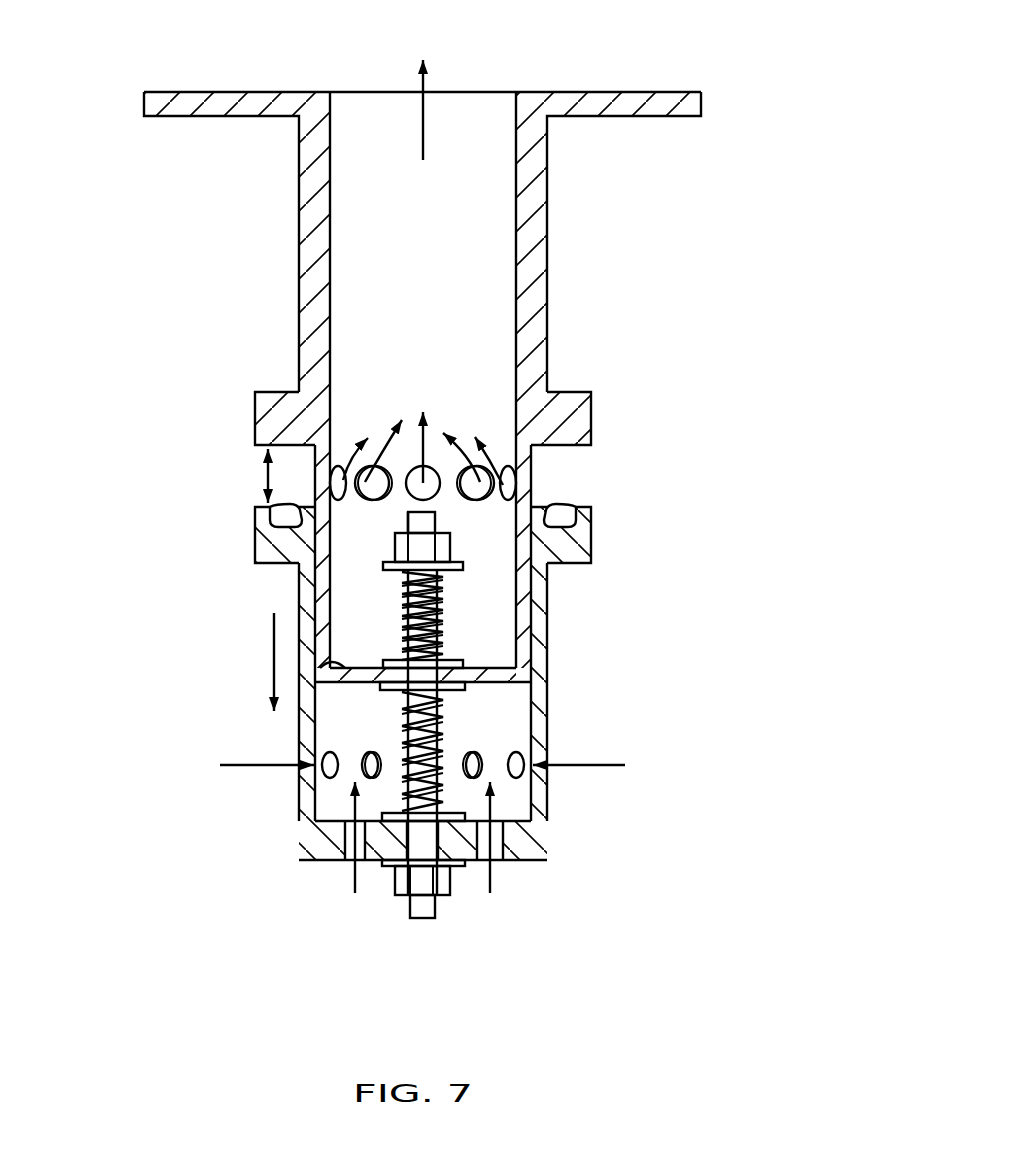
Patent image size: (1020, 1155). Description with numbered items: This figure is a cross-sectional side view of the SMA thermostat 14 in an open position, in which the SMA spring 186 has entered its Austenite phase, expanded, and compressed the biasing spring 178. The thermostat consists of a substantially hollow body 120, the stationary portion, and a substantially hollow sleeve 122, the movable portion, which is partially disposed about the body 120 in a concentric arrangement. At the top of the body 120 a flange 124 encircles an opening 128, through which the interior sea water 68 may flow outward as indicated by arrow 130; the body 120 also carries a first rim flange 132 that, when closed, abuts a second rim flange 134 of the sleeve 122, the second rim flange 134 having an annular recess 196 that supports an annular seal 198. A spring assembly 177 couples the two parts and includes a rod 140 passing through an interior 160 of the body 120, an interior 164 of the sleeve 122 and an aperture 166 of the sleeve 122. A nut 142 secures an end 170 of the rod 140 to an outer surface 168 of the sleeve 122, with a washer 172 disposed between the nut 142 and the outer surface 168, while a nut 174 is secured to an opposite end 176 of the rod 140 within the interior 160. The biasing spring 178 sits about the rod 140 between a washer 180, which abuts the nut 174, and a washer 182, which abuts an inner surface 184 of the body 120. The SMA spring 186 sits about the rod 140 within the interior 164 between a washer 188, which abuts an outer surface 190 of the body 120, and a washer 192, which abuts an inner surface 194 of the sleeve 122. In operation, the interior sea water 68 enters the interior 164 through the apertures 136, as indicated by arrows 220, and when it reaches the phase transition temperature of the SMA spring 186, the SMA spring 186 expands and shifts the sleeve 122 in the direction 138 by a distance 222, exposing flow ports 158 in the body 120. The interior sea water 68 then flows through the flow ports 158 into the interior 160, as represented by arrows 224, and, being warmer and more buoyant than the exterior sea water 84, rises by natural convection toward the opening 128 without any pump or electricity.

The SMA thermostat 14 is at (650, 66).
The interior sea water 68 is at (726, 848).
The exterior sea water 84 is at (562, 36).
The body 120 is at (540, 207).
The sleeve 122 is at (540, 675).
The flange 124 is at (635, 104).
The opening 128 is at (328, 74).
The arrow 130 is at (422, 148).
The first rim flange 132 is at (565, 395).
The second rim flange 134 is at (580, 545).
The apertures 136 is at (538, 808).
The direction 138 is at (272, 655).
The rod 140 is at (420, 925).
The nut 142 is at (415, 900).
The flow ports 158 is at (490, 468).
The interior 160 is at (457, 645).
The interior 164 is at (300, 828).
The aperture 166 is at (468, 863).
The outer surface 168 is at (470, 880).
The end 170 is at (432, 932).
The washer 172 is at (395, 860).
The nut 174 is at (440, 547).
The end 176 is at (393, 524).
The spring assembly 177 is at (390, 590).
The biasing spring 178 is at (440, 615).
The washer 180 is at (460, 570).
The washer 182 is at (393, 662).
The inner surface 184 is at (330, 663).
The SMA spring 186 is at (465, 740).
The washer 188 is at (465, 686).
The outer surface 190 is at (320, 700).
The washer 192 is at (398, 812).
The inner surface 194 is at (380, 818).
The annular recess 196 is at (300, 530).
The annular seal 198 is at (285, 517).
The arrows 220 is at (605, 848).
The distance 222 is at (265, 475).
The arrows 224 is at (418, 440).